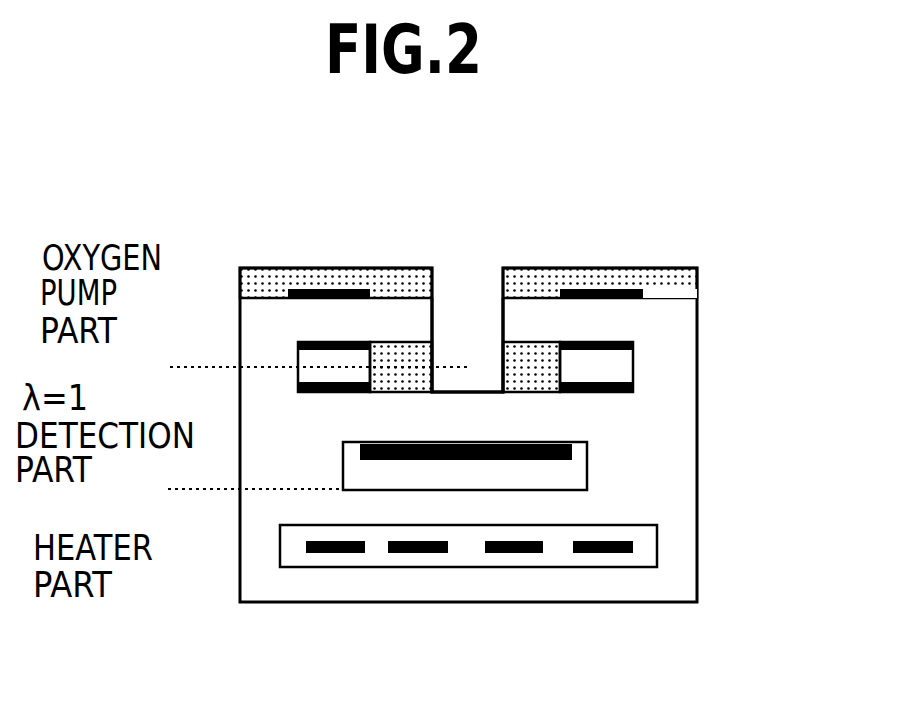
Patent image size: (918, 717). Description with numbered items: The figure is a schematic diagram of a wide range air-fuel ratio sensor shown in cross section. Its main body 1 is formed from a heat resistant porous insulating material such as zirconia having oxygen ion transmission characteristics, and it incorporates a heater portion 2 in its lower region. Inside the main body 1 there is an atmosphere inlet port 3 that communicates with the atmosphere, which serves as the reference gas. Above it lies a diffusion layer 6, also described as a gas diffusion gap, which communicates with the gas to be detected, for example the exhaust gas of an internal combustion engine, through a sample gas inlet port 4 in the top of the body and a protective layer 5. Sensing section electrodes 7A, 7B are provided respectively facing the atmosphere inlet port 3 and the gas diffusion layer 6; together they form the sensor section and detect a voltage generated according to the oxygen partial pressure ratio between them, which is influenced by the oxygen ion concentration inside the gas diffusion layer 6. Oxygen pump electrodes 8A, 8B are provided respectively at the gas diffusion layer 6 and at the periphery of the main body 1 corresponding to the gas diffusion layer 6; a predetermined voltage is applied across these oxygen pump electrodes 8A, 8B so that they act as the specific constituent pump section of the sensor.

The main body 1 is at (262, 588).
The heater portion 2 is at (618, 552).
The atmosphere inlet port 3 is at (568, 477).
The sample gas inlet port 4 is at (433, 317).
The protective layer 5 is at (503, 363).
The diffusion layer 6 is at (610, 365).
The sensing section electrode 7A is at (585, 446).
The sensing section electrode 7B is at (607, 393).
The oxygen pump electrode 8A is at (633, 343).
The oxygen pump electrode 8B is at (643, 293).